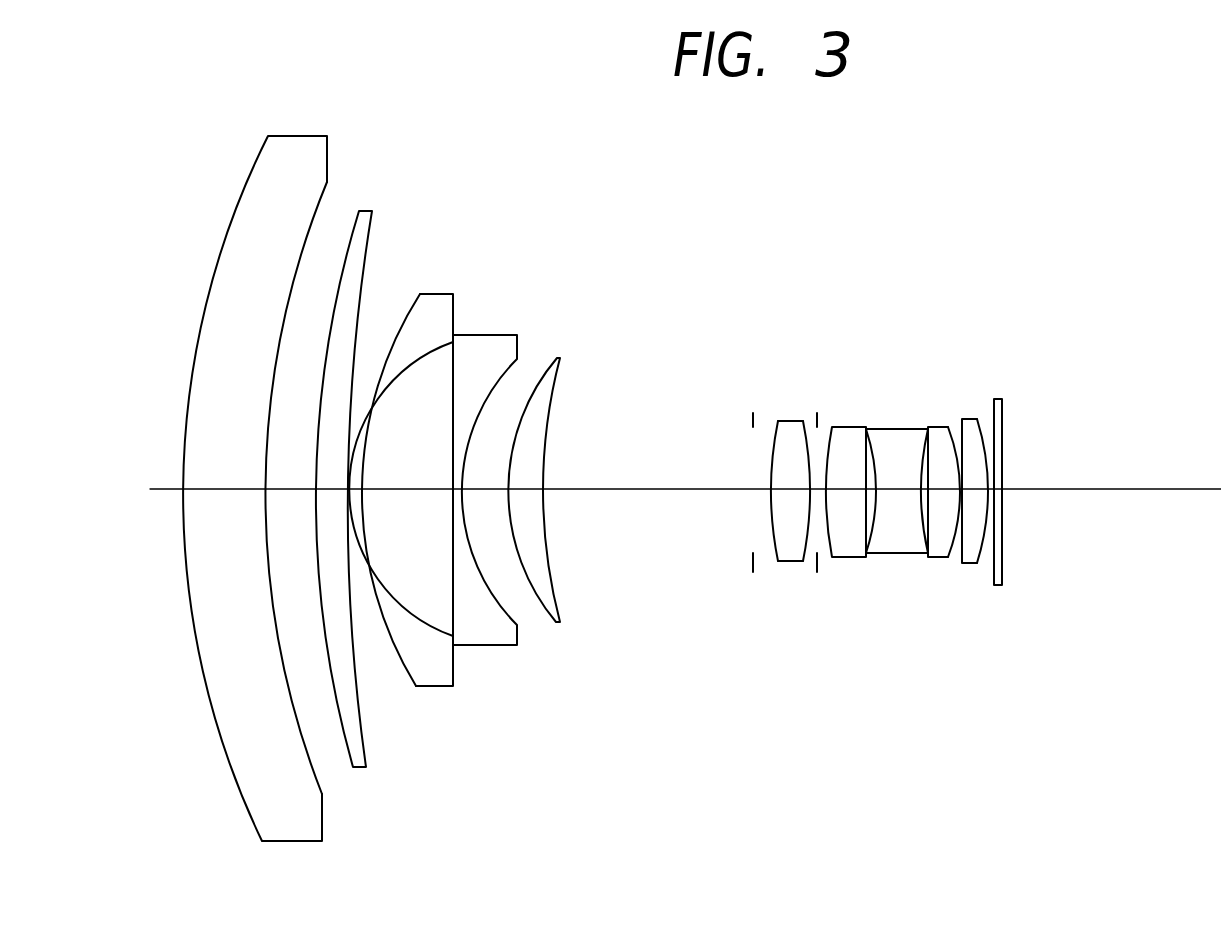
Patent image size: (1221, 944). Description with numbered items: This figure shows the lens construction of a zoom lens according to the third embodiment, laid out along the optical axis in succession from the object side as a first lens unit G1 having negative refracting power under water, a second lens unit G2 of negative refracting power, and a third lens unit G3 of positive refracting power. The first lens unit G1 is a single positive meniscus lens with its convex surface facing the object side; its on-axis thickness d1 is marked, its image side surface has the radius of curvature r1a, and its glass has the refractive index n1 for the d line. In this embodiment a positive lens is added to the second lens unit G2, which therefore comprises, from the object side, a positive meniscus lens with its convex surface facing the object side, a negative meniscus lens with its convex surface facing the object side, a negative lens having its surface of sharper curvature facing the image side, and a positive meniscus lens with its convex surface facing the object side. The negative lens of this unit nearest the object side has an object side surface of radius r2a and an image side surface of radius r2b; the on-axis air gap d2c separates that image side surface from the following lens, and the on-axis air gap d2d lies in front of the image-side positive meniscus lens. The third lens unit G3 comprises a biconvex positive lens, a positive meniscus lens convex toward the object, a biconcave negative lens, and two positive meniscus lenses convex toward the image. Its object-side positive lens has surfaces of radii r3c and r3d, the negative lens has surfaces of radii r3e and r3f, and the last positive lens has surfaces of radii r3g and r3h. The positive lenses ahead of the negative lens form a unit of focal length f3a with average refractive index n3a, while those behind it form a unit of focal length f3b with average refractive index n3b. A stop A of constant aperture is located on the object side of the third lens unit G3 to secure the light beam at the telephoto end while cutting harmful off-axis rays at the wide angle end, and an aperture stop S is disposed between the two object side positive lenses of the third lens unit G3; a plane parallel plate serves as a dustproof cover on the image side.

The first lens unit G1 is at (286, 528).
The second lens unit G2 is at (445, 521).
The third lens unit G3 is at (877, 483).
The refractive index of the object-side lens of the first lens unit n1 is at (286, 488).
The radius of curvature of the image side surface of the first lens unit lens r1a is at (318, 207).
The on-axis thickness of the first lens unit lens d1 is at (266, 489).
The radius of curvature of the object side surface of the second unit negative lens r2a is at (395, 333).
The radius of curvature of the image side surface of the second unit negative lens r2b is at (418, 368).
The on-axis air gap behind the second unit negative lens d2c is at (447, 489).
The on-axis air gap before the second unit positive meniscus lens d2d is at (508, 489).
The focal length of the object-side positive lens unit of the third lens unit f3a is at (779, 492).
The focal length of the image-side positive lens unit of the third lens unit f3b is at (993, 473).
The radius of curvature of the object side surface of the first positive lens of the r3c is at (774, 448).
The radius of curvature of the image side surface of the first positive lens of the r3d is at (806, 453).
The radius of curvature of the object side surface of the third unit negative lens r3e is at (873, 440).
The radius of curvature of the image side surface of the third unit negative lens r3f is at (921, 498).
The radius of curvature of the object side surface of the last positive lens of the r3g is at (960, 524).
The radius of curvature of the image side surface of the last positive lens of the t r3h is at (980, 547).
The average refractive index of the object-side positive lenses of the third unit n3a is at (779, 516).
The average refractive index of the image-side positive lenses of the third unit n3b is at (964, 492).
The stop A is at (751, 560).
The aperture stop S is at (816, 566).